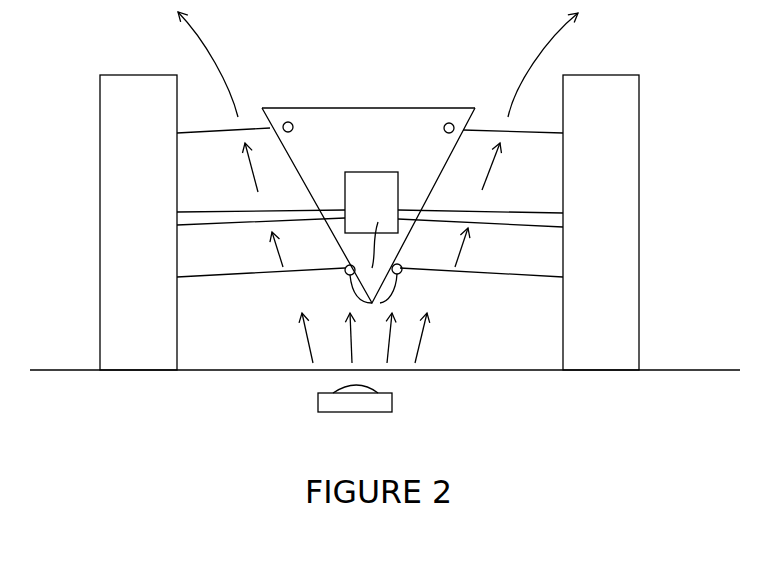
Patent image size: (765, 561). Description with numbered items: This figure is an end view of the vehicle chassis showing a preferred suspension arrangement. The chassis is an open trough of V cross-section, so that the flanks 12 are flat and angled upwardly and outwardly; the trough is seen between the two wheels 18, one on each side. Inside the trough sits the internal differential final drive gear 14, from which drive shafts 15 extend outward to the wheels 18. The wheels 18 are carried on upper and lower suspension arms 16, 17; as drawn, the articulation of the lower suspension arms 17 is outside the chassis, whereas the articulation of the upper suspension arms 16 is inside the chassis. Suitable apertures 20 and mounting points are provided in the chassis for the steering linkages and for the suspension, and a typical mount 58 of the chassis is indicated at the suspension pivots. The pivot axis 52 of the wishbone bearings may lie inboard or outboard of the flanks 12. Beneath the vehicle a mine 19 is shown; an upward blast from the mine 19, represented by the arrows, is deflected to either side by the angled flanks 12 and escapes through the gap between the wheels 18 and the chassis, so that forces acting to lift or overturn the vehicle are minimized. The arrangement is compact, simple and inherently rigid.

The flanks 12 is at (303, 142).
The internal differential final drive gear 14 is at (400, 108).
The drive shafts 15 is at (205, 212).
The upper suspension arms 16 is at (207, 130).
The lower suspension arms 17 is at (210, 278).
The wheels 18 is at (122, 103).
The mine 19 is at (318, 400).
The apertures 20 is at (312, 222).
The pivot axis 52 is at (286, 122).
The mount 58 is at (293, 126).